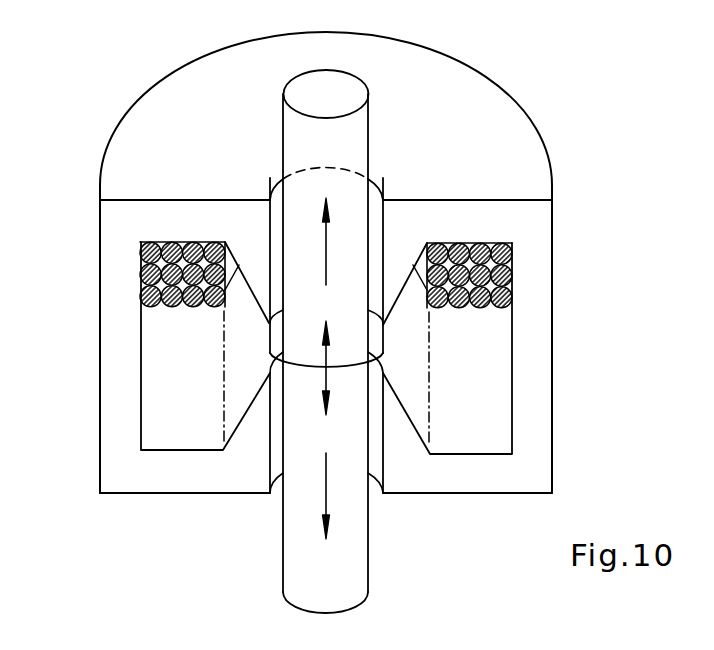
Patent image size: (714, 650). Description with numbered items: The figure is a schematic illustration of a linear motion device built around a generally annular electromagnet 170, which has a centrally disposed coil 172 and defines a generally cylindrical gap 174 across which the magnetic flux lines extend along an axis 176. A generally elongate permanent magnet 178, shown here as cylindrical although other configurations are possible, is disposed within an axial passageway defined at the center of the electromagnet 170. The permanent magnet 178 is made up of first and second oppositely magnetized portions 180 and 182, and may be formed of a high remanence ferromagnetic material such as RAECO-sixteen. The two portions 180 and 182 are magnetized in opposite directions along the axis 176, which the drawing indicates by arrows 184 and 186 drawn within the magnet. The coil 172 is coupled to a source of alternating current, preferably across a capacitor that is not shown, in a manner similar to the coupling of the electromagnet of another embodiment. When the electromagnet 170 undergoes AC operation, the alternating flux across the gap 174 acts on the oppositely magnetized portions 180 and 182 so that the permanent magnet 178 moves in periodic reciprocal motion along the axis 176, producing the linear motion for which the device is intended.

The electromagnet 170 is at (104, 298).
The coil 172 is at (512, 295).
The gap 174 is at (382, 348).
The axis 176 is at (322, 355).
The permanent magnet 178 is at (350, 143).
The first magnetized portion 180 is at (293, 128).
The second magnetized portion 182 is at (292, 552).
The arrow 184 is at (325, 259).
The arrow 186 is at (326, 500).